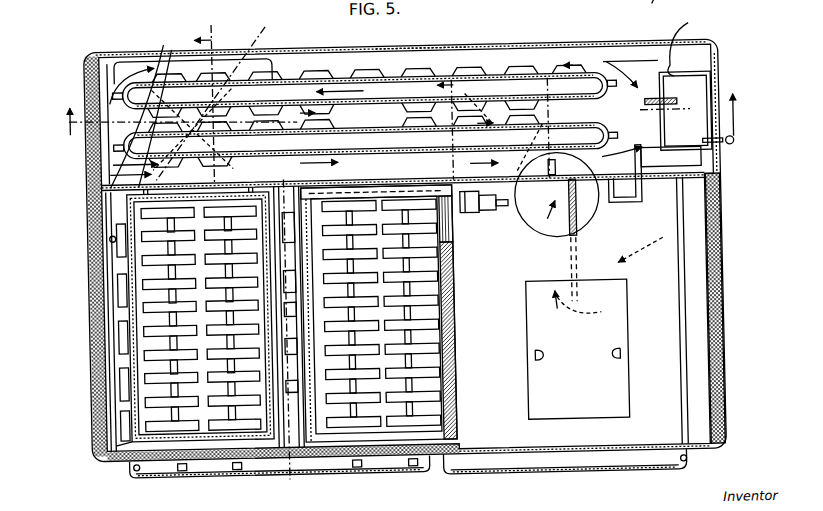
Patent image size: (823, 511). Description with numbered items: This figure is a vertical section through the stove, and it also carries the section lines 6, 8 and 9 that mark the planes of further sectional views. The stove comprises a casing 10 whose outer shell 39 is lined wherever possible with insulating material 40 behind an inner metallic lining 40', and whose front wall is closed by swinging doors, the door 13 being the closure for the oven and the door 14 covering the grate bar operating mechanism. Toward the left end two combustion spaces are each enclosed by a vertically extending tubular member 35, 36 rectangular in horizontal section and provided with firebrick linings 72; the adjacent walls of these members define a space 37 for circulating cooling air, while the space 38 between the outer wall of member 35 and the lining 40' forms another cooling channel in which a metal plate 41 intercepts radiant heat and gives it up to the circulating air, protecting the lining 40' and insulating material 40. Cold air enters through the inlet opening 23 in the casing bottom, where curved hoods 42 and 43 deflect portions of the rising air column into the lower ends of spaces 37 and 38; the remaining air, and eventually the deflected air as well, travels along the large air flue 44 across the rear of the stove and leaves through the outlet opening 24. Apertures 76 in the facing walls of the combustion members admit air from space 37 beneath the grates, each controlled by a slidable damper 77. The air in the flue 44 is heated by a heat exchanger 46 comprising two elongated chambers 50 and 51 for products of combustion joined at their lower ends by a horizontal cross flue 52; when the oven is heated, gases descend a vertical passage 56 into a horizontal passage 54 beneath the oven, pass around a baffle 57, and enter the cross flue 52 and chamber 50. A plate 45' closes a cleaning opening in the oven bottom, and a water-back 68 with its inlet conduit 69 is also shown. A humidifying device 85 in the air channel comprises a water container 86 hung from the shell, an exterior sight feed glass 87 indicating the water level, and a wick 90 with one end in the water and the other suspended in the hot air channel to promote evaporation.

The section line 6 is at (198, 9).
The section line 8- 8 is at (395, 121).
The section line 9- 9 is at (245, 251).
The casing 10 is at (92, 233).
The door 13 is at (492, 474).
The door 14 is at (177, 475).
The inlet opening 23 is at (219, 94).
The outlet opening 24 is at (661, 106).
The tubular member 35 is at (113, 341).
The tubular member 36 is at (457, 304).
The space 37 is at (293, 441).
The space 38 is at (108, 292).
The outer shell 39 is at (720, 244).
The insulating material 40 is at (402, 252).
The inner metallic lining 40' is at (79, 323).
The plate 41 is at (117, 402).
The hood 42 is at (363, 105).
The hood 43 is at (347, 101).
The air flue 44 is at (411, 50).
The plate 45' is at (578, 363).
The heat exchanger 46 is at (362, 165).
The elongated chamber 50 is at (343, 114).
The elongated chamber 51 is at (395, 137).
The horizontal cross flue 52 is at (455, 162).
The horizontal flue 54 is at (540, 226).
The vertical passage 56 is at (643, 348).
The baffle 57 is at (586, 229).
The water-back 68 is at (442, 245).
The inlet conduit 69 is at (491, 212).
The firebrick lining 72 is at (136, 431).
The aperture 76 is at (264, 389).
The slidable damper 77 is at (283, 350).
The humidifying device 85 is at (631, 65).
The water container 86 is at (707, 94).
The sight feed glass 87 is at (736, 150).
The wick 90 is at (648, 108).